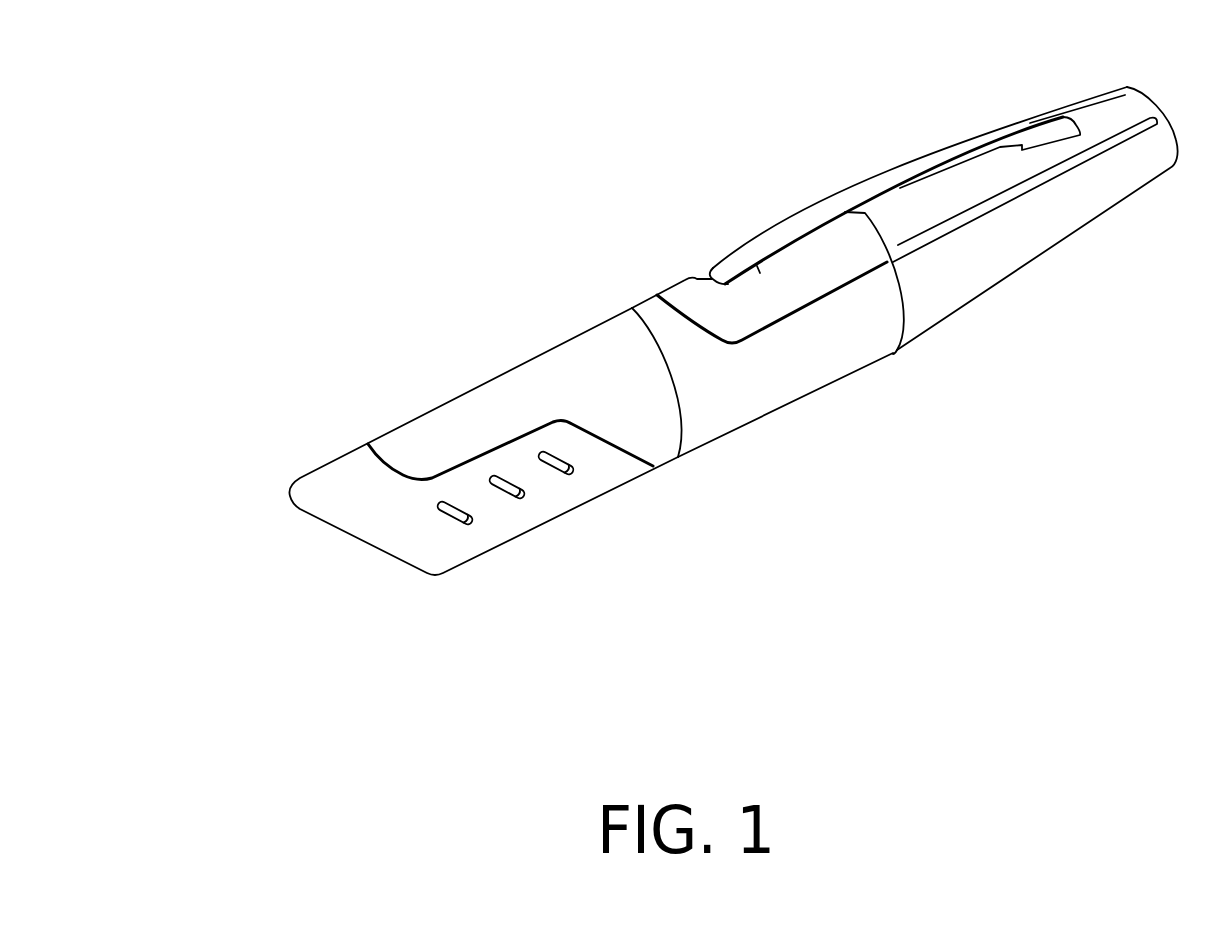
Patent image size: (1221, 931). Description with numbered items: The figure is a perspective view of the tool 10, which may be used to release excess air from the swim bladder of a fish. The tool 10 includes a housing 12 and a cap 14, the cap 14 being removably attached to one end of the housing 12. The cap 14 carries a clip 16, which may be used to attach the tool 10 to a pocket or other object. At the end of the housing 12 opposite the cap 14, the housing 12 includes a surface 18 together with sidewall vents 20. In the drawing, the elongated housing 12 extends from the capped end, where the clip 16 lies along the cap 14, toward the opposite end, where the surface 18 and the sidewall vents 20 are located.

The tool 10 is at (392, 220).
The housing 12 is at (733, 311).
The cap 14 is at (1030, 220).
The clip 16 is at (918, 182).
The surface 18 is at (451, 484).
The sidewall vents 20 is at (475, 525).